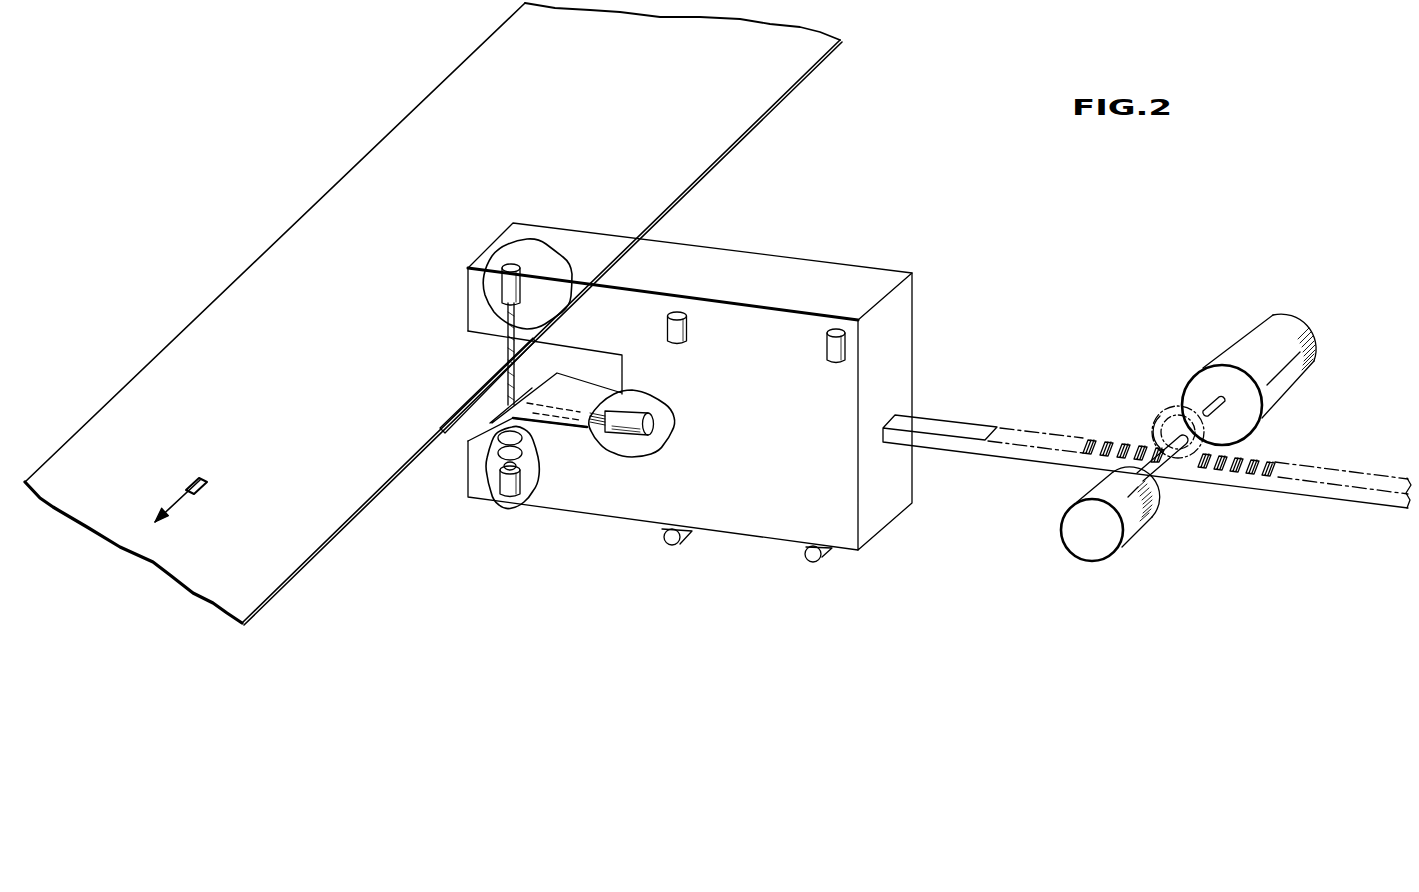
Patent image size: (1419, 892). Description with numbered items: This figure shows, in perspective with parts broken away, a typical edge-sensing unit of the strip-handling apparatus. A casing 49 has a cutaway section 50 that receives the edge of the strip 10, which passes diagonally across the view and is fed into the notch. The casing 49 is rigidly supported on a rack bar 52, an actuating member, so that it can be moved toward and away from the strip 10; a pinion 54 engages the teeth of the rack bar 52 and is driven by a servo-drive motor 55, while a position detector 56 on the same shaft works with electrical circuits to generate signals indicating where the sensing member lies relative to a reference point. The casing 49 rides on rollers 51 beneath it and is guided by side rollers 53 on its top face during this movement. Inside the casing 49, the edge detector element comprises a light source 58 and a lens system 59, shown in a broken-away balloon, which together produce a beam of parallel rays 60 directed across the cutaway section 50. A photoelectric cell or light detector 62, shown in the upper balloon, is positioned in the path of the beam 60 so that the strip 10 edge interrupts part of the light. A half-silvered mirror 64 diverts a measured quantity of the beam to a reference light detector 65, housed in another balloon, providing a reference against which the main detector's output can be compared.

The strip 10 is at (332, 203).
The casing 49 is at (812, 273).
The cutaway section 50 is at (612, 366).
The rollers 51 is at (747, 553).
The rack bar 52 is at (995, 452).
The side rollers 53 is at (685, 328).
The pinion 54 is at (1176, 420).
The servo-drive motor 55 is at (1227, 358).
The position detector 56 is at (1072, 523).
The light source 58 is at (505, 487).
The lens system 59 is at (507, 443).
The beam of parallel rays 60 is at (507, 380).
The light detector 62 is at (520, 287).
The half-silvered mirror 64 is at (498, 410).
The reference light detector 65 is at (627, 437).